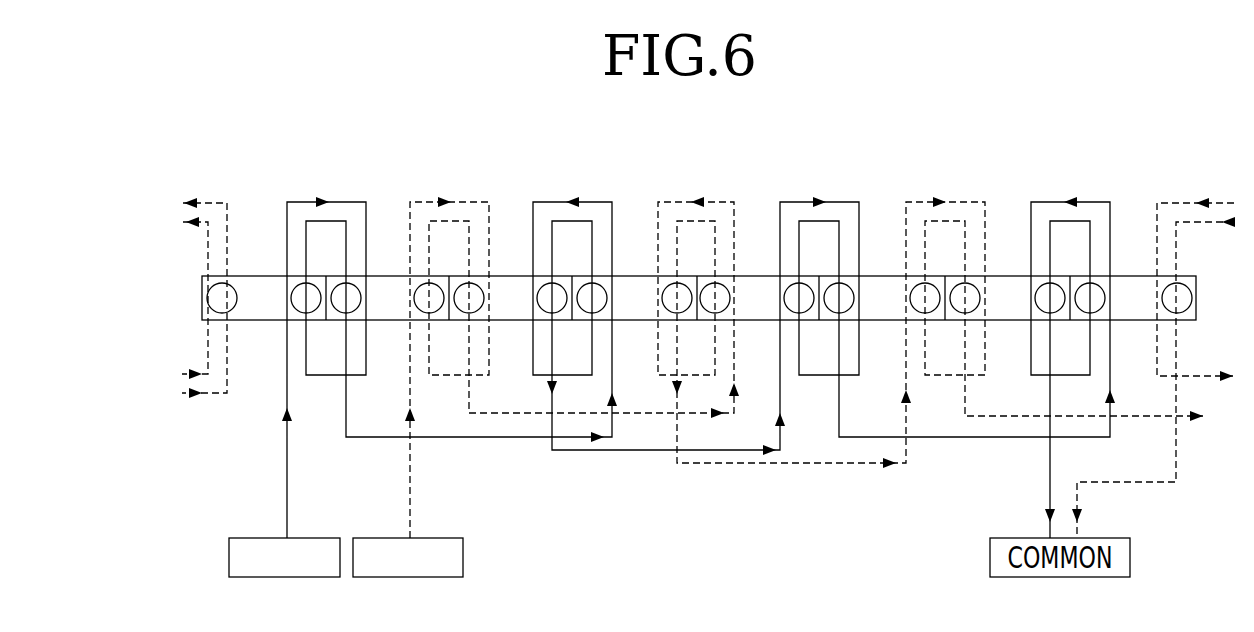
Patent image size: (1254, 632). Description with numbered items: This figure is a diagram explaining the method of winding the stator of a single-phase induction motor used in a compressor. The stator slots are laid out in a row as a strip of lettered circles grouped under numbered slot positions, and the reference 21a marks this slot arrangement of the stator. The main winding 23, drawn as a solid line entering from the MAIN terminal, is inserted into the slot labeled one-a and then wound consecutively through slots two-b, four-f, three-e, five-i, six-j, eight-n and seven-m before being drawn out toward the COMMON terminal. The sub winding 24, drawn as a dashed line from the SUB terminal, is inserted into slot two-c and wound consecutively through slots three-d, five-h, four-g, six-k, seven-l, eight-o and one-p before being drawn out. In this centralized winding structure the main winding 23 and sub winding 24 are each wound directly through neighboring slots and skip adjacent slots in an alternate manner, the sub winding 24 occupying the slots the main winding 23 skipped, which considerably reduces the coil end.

The electrode terminal strip 21a is at (196, 332).
The main winding 23 is at (287, 503).
The sub winding 24 is at (408, 497).